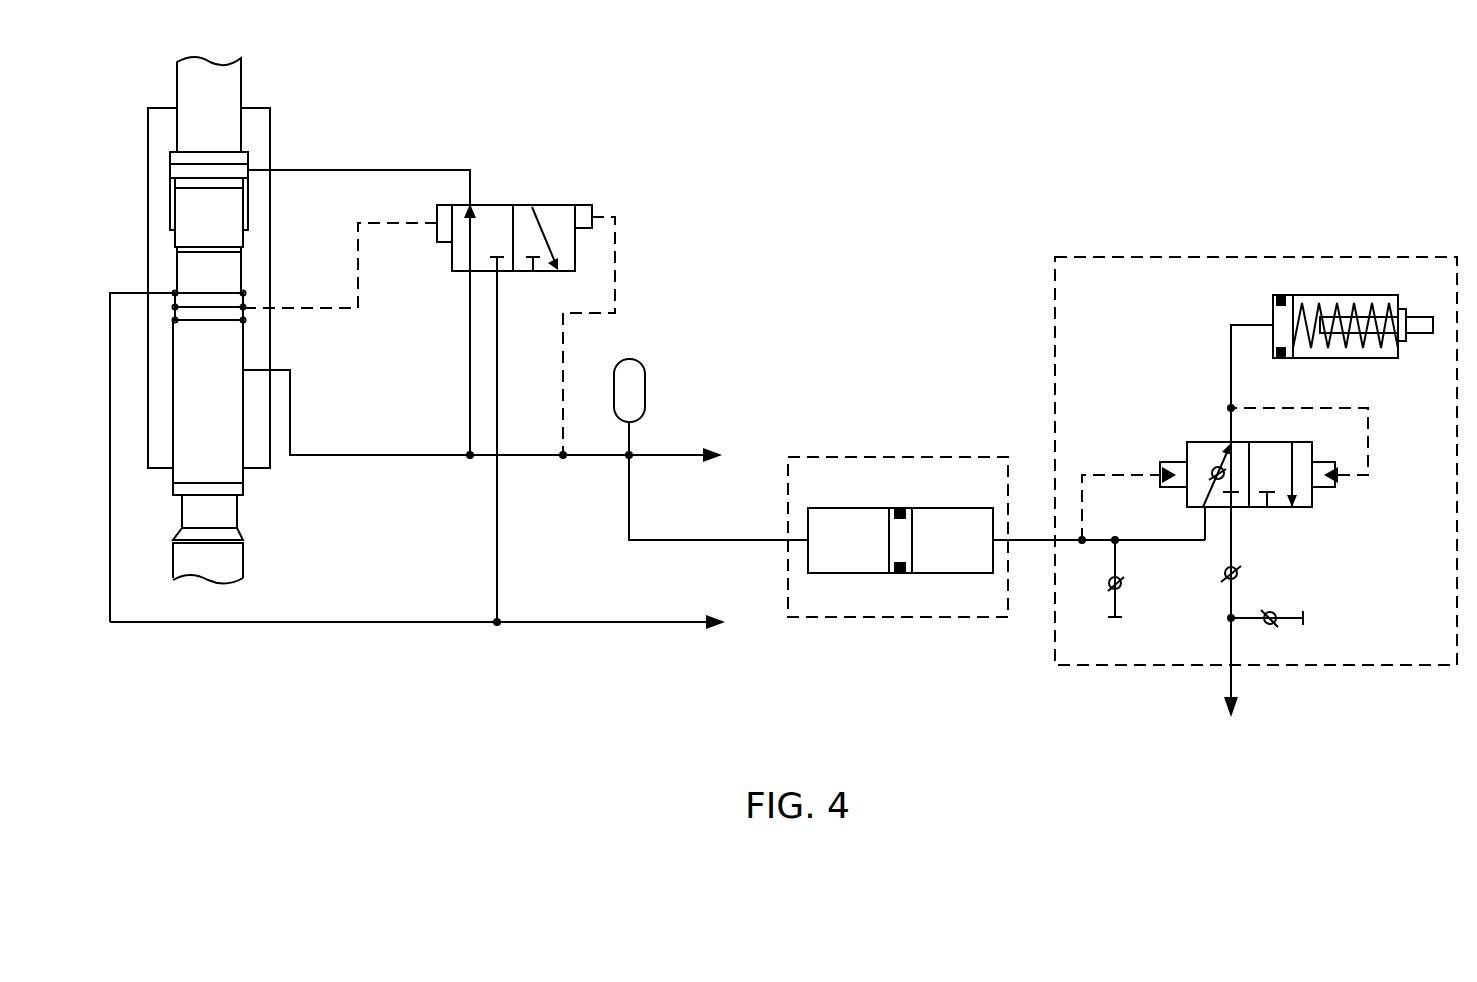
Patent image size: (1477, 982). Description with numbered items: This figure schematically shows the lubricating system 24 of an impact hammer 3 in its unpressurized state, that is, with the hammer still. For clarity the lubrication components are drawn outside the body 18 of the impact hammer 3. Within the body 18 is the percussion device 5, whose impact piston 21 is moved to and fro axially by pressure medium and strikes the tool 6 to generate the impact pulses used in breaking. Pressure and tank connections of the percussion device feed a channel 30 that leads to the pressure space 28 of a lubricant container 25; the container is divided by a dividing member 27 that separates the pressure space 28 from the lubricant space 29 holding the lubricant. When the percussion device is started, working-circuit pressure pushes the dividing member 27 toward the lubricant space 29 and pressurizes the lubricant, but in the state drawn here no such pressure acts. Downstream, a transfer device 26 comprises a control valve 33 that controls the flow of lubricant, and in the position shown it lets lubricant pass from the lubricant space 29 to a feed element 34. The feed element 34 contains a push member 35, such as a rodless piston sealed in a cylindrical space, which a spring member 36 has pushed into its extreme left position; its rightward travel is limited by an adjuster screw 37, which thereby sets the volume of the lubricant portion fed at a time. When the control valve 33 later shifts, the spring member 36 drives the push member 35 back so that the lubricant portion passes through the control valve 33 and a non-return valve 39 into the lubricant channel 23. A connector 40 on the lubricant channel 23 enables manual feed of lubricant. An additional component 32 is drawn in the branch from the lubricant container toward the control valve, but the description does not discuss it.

The impact hammer 3 is at (225, 339).
The percussion device 5 is at (262, 330).
The tool 6 is at (238, 575).
The body 18 is at (271, 251).
The impact piston 21 is at (226, 425).
The lubricant channel 23 is at (1235, 683).
The hydraulic circuit 24 is at (792, 402).
The lubricant container 25 is at (898, 551).
The transfer device 26 is at (1228, 458).
The dividing member 27 is at (898, 535).
The pressure space 28 is at (872, 556).
The lubricant space 29 is at (970, 556).
The channel 30 is at (698, 542).
The check valve 32 is at (1112, 620).
The control valve 33 is at (1285, 508).
The feed element 34 is at (1351, 268).
The push member 35 is at (1273, 313).
The spring member 36 is at (1320, 312).
The adjuster screw 37 is at (1424, 318).
The non-return valve 39 is at (1239, 571).
The connector 40 is at (1311, 613).